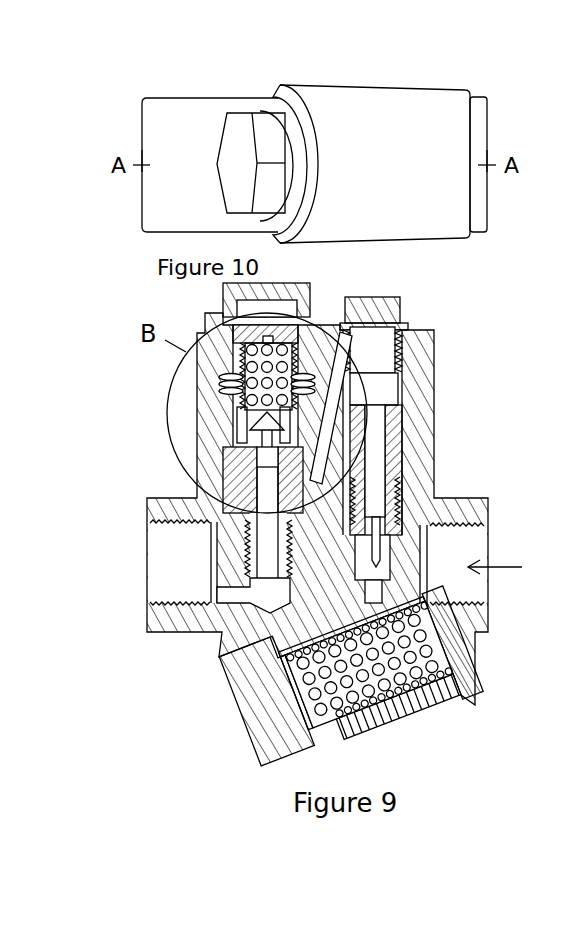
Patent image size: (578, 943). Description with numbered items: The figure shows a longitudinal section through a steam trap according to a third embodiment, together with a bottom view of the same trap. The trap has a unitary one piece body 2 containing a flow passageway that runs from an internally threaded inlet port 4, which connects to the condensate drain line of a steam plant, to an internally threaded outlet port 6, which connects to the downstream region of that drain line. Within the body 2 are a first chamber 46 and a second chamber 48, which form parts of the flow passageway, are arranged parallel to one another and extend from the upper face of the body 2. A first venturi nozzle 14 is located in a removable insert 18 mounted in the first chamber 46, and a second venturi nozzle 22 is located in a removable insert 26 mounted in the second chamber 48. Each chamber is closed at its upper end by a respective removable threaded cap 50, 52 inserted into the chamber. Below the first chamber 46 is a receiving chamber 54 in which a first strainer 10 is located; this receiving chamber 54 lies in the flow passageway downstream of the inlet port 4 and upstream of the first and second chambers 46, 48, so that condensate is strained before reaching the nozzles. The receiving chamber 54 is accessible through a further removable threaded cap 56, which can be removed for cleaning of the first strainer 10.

In FIG. 10, the body 2 is at (420, 92).
In FIG. 9, the body 2 is at (431, 432).
In FIG. 9, the inlet port 4 is at (477, 537).
In FIG. 9, the outlet port 6 is at (162, 597).
In FIG. 9, the first strainer 10 is at (432, 718).
In FIG. 9, the first venturi nozzle 14 is at (380, 547).
In FIG. 9, the removable insert 18 is at (393, 462).
In FIG. 9, the second venturi nozzle 22 is at (243, 440).
In FIG. 9, the removable insert 26 is at (243, 488).
In FIG. 9, the first chamber 46 is at (392, 388).
In FIG. 9, the second chamber 48 is at (228, 398).
In FIG. 9, the removable threaded cap 50 is at (400, 304).
In FIG. 9, the removable threaded cap 52 is at (228, 302).
In FIG. 9, the receiving chamber 54 is at (395, 700).
In FIG. 10, the removable threaded cap 56 is at (240, 133).
In FIG. 9, the removable threaded cap 56 is at (252, 712).